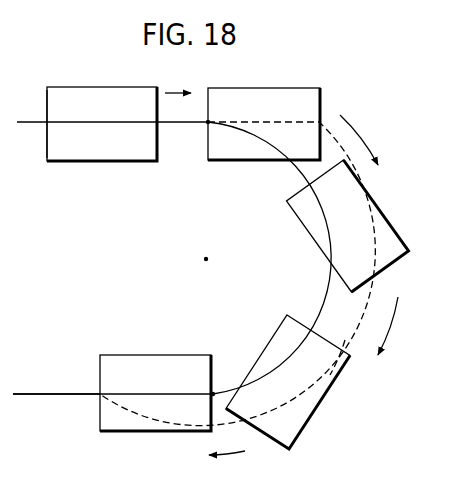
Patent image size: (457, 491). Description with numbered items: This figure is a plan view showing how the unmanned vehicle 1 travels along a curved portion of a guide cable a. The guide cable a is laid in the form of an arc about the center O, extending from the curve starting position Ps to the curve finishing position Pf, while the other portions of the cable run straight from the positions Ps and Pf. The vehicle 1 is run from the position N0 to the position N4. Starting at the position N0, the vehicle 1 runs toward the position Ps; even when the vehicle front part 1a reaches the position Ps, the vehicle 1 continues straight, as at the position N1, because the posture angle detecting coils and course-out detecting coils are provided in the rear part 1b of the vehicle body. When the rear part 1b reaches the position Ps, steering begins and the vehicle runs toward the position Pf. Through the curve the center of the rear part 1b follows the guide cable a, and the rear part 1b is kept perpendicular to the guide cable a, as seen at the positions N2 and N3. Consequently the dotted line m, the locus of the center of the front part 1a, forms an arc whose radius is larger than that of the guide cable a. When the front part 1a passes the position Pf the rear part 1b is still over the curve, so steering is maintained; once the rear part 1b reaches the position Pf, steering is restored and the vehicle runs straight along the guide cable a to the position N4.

The unmanned vehicle 1 is at (95, 84).
The vehicle front part 1a is at (158, 108).
The vehicle rear part 1b is at (47, 104).
The position N0 is at (102, 136).
The position N1 is at (264, 138).
The position N2 is at (348, 226).
The position N3 is at (288, 382).
The position N4 is at (155, 382).
The curve starting position Ps is at (205, 128).
The curve finishing position Pf is at (216, 390).
The center of the arc O is at (215, 259).
The locus of the center of the vehicle front part m is at (355, 362).
The guide cable a is at (42, 394).